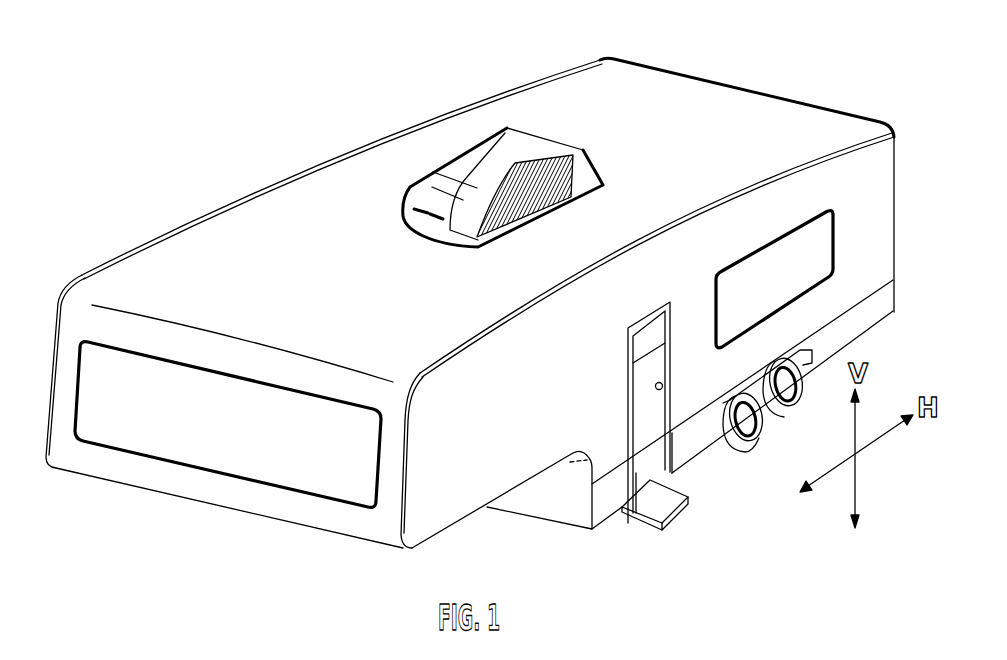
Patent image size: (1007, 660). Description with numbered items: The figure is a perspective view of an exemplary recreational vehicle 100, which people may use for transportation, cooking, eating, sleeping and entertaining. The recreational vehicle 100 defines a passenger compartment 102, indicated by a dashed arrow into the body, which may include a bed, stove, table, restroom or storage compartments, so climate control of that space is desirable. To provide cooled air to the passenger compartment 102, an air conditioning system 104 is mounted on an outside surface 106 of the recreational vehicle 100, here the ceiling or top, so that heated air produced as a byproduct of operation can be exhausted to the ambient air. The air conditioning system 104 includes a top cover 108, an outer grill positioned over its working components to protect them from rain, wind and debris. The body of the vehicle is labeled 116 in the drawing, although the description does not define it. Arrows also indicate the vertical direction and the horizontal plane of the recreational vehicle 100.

The recreational vehicle 100 is at (234, 92).
The passenger compartment 102 is at (630, 130).
The air conditioning system 104 is at (525, 172).
The outside surface 106 is at (760, 109).
The top cover 108 is at (504, 128).
The vehicle body 116 is at (356, 87).